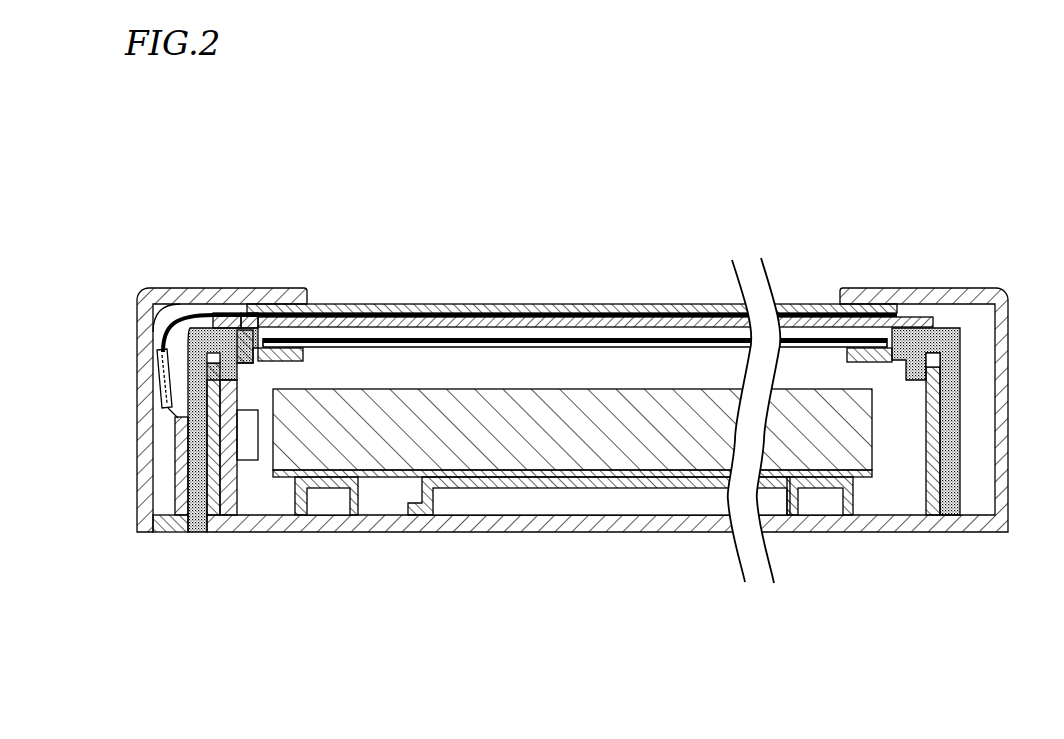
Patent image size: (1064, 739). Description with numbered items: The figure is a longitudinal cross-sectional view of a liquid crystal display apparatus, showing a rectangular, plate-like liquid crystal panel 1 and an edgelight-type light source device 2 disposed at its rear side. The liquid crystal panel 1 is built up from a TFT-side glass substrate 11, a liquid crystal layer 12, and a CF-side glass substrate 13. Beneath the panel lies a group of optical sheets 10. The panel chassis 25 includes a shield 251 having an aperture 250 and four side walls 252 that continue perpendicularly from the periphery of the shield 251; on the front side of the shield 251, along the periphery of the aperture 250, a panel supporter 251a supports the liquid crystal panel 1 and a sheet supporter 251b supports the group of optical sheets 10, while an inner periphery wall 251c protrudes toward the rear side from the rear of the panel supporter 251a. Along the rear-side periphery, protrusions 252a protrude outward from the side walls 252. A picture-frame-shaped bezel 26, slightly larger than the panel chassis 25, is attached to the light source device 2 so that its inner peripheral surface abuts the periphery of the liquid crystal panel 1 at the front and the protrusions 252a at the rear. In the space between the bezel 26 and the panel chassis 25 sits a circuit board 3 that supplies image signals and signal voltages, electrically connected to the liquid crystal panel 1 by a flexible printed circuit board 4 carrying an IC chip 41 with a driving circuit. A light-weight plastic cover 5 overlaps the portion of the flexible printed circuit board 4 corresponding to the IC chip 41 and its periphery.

The liquid crystal panel 1 is at (636, 190).
The light source device 2 is at (497, 384).
The circuit board 3 is at (176, 452).
The flexible printed circuit board 4 is at (140, 296).
The cover 5 is at (158, 362).
The group of optical sheets 10 is at (814, 331).
The TFT-side glass substrate 11 is at (657, 308).
The liquid crystal layer 12 is at (622, 316).
The CF-side glass substrate 13 is at (594, 305).
The panel chassis 25 is at (962, 357).
The bezel 26 is at (190, 287).
The IC chip 41 is at (158, 380).
The aperture 250 is at (308, 345).
The shield 251 is at (336, 363).
The panel supporter 251a is at (232, 303).
The sheet supporter 251b is at (301, 300).
The inner periphery wall 251c is at (258, 304).
The side wall 252 is at (196, 490).
The protrusion 252a is at (176, 532).